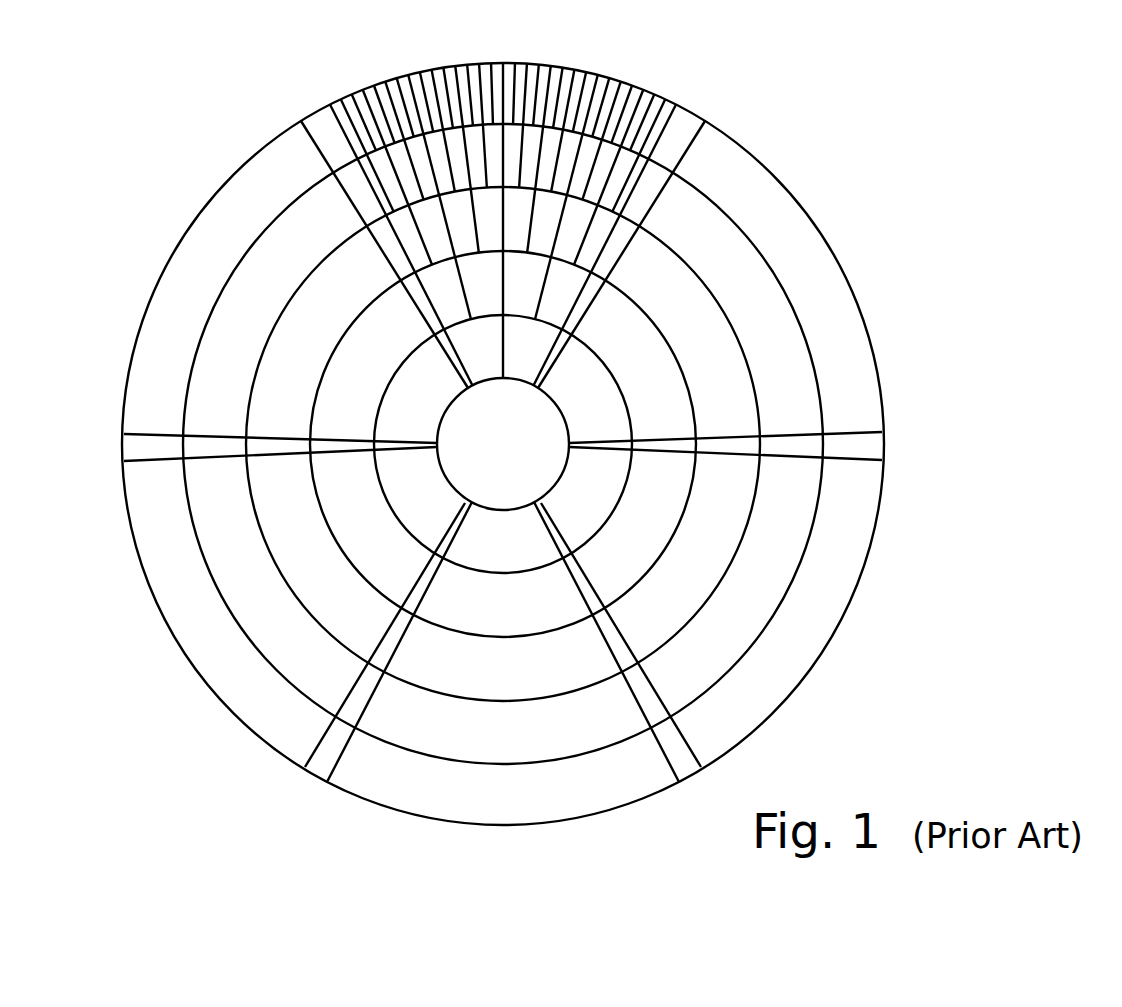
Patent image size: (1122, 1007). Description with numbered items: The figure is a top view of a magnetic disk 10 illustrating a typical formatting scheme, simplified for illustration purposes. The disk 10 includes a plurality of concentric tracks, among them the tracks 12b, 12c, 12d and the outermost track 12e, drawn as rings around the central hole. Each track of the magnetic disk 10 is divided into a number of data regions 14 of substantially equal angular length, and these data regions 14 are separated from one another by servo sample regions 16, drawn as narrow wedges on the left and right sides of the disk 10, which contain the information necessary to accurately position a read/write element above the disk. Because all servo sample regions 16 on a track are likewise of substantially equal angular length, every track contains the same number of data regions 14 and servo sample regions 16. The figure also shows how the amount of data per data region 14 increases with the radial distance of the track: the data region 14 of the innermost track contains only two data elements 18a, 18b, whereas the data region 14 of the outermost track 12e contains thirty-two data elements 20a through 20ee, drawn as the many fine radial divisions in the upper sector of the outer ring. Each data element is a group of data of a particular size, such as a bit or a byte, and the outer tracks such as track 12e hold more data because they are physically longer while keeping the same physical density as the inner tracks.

The magnetic disk 10 is at (543, 436).
The track 12b is at (503, 444).
The track 12c is at (503, 444).
The track 12d is at (503, 444).
The outermost track 12e is at (503, 444).
The data region 14 is at (503, 625).
The servo sample region 16 is at (506, 448).
The data element 18a is at (402, 225).
The data element 18b is at (606, 254).
The data element 20a is at (380, 223).
The data element 20ee is at (626, 217).